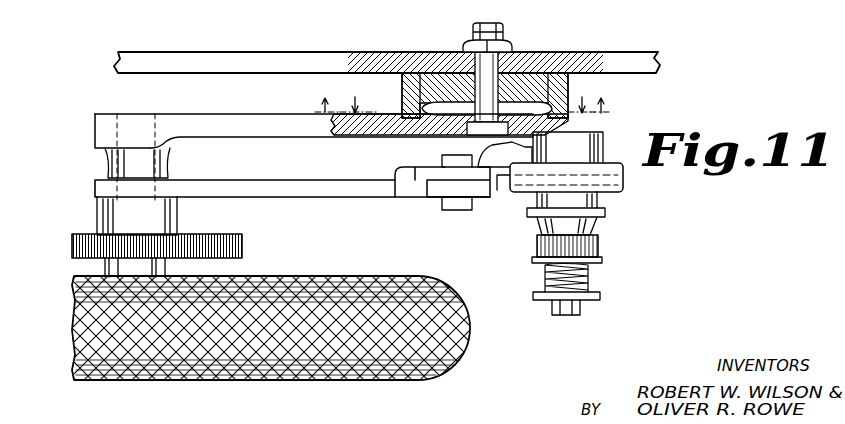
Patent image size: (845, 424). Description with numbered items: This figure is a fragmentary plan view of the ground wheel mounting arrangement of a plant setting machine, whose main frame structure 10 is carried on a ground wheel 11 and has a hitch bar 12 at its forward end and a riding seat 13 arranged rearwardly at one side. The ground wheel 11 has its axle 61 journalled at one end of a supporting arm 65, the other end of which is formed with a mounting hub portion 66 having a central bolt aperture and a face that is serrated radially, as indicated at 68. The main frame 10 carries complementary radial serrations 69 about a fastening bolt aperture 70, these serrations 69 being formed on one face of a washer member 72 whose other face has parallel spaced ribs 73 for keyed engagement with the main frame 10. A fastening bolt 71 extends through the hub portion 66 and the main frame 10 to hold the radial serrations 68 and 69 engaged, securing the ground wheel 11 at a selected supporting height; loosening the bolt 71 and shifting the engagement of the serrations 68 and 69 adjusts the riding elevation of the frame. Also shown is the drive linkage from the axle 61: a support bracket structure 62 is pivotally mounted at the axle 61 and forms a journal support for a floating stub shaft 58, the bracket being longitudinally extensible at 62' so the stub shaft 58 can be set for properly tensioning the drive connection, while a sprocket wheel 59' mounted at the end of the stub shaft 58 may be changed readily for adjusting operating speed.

The main frame structure 10 is at (283, 51).
The ground wheel 11 is at (288, 383).
The hitch bar 12 is at (468, 97).
The riding seat 13 is at (465, 106).
The floating stub shaft 58 is at (572, 320).
The sprocket wheel 59' is at (580, 197).
The axle 61 is at (139, 128).
The support bracket structure 62 is at (281, 228).
The longitudinally extensible portion 62' is at (463, 189).
The supporting arm 65 is at (230, 113).
The mounting hub portion 66 is at (424, 137).
The radial serrations 68 is at (362, 140).
The complementary radial serrations 69 is at (401, 106).
The fastening bolt aperture 70 is at (516, 51).
The fastening bolt 71 is at (503, 29).
The washer member 72 is at (590, 64).
The parallel spaced ribs 73 is at (558, 54).